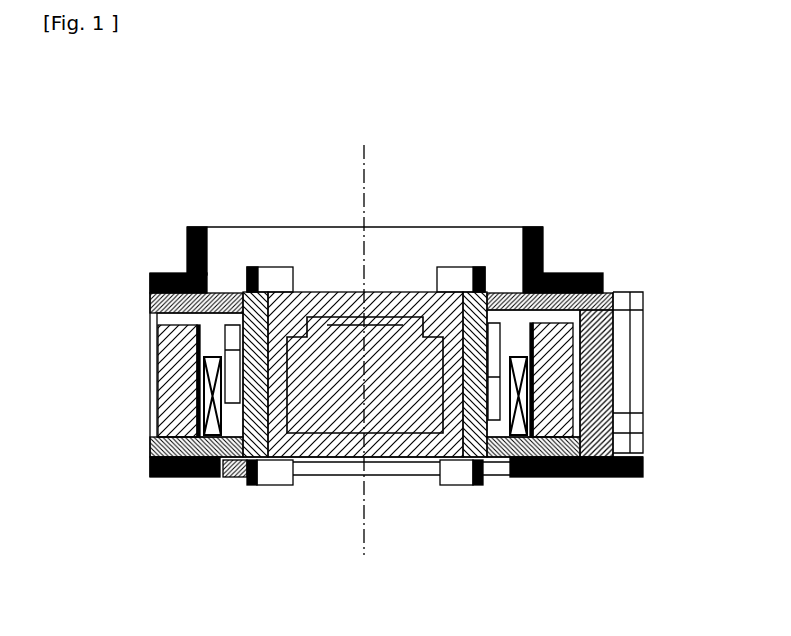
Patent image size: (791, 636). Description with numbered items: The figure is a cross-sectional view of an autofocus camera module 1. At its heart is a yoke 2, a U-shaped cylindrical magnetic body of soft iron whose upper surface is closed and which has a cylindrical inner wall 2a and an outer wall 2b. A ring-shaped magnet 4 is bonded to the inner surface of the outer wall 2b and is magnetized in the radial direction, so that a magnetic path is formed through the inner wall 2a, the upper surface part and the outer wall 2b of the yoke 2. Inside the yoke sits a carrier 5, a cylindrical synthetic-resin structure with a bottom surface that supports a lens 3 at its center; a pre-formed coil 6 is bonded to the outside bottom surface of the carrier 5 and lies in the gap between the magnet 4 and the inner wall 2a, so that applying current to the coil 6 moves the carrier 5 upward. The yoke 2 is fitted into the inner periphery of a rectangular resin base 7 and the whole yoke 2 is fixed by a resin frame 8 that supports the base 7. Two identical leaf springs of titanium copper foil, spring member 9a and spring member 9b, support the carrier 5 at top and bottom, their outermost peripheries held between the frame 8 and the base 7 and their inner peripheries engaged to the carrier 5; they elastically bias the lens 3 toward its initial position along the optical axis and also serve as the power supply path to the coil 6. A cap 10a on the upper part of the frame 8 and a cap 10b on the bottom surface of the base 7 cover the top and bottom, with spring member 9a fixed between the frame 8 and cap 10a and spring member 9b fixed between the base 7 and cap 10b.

The autofocus camera module 1 is at (488, 222).
The yoke 2 is at (618, 355).
The inner wall 2a is at (178, 272).
The outer wall 2b is at (150, 365).
The lens 3 is at (415, 463).
The magnet 4 is at (580, 276).
The carrier 5 is at (478, 480).
The coil 6 is at (517, 477).
The base 7 is at (618, 428).
The frame 8 is at (618, 310).
The spring member 9a is at (238, 410).
The spring member 9b is at (230, 463).
The cap 10a is at (547, 230).
The cap 10b is at (600, 478).